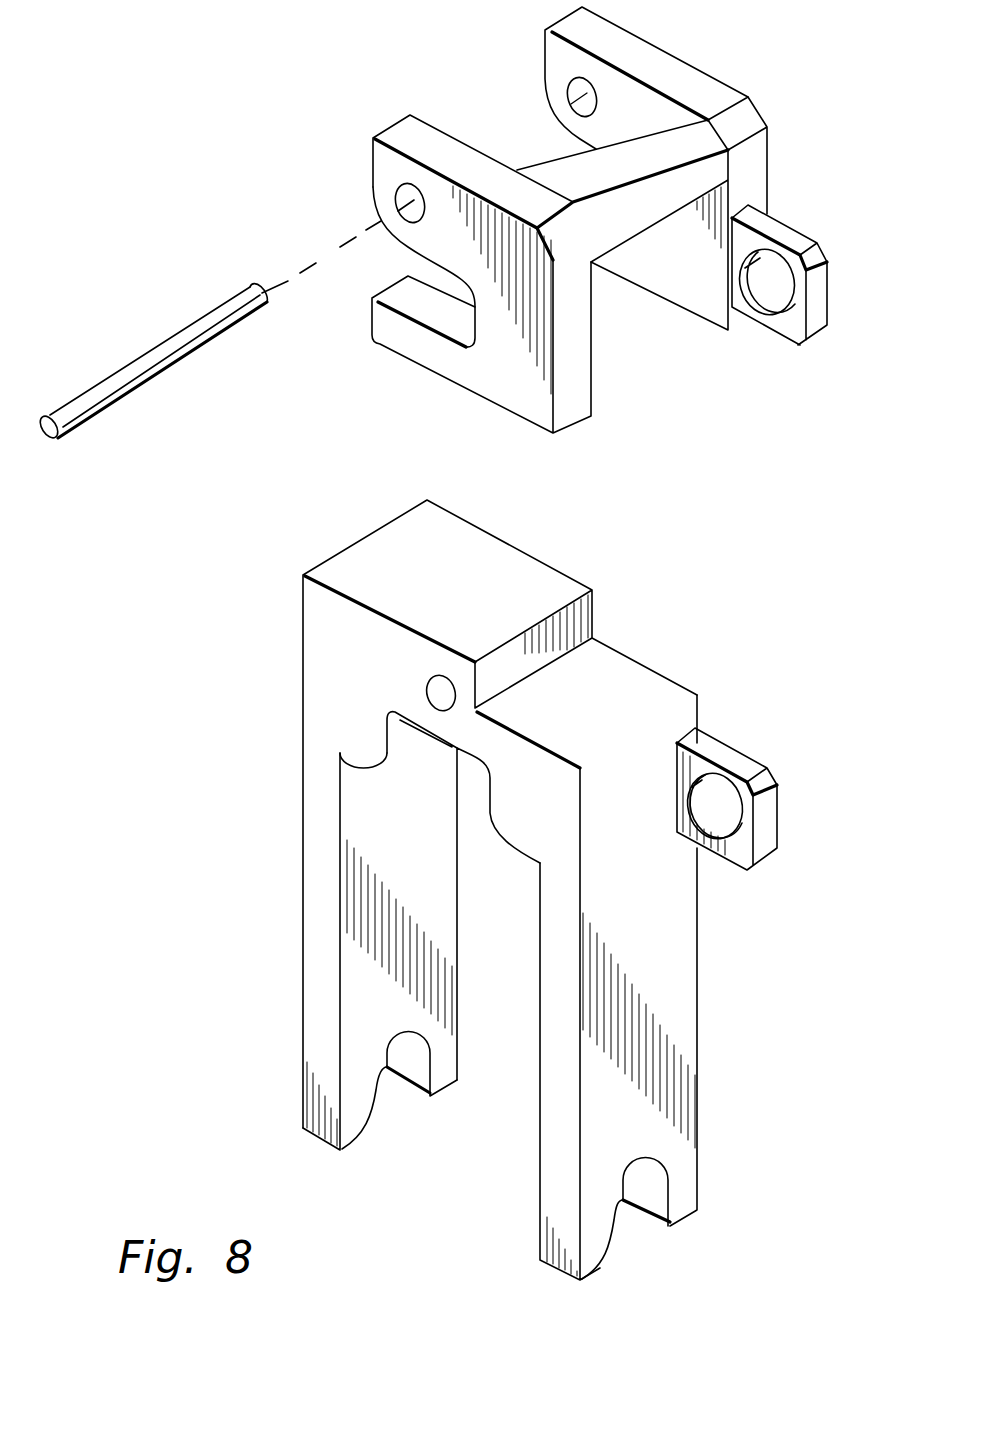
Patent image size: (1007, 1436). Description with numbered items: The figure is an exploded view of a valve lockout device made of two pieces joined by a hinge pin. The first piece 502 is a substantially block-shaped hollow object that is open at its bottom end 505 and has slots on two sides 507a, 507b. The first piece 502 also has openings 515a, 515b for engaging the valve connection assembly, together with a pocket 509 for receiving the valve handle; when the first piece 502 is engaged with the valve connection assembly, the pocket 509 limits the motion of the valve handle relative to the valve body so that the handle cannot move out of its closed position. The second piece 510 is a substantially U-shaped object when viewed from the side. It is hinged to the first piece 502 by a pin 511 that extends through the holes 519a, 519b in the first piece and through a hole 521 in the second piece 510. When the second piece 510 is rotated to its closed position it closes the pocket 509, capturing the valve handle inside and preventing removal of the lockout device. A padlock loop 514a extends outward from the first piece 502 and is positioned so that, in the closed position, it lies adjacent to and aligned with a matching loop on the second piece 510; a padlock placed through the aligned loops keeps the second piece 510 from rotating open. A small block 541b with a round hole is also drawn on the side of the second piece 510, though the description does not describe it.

The second piece 510 is at (512, 402).
The pin 511 is at (180, 332).
The hole 519a is at (372, 186).
The hole 519b is at (545, 80).
The threaded block 541b is at (828, 290).
The bottom end 505 is at (516, 1129).
The first piece 502 is at (690, 1002).
The slot 507a is at (322, 1046).
The slot 507b is at (457, 940).
The pocket 509 is at (398, 742).
The opening 515a is at (413, 1070).
The opening 515b is at (652, 1200).
The hole 521 is at (447, 695).
The padlock loop 514a is at (778, 808).